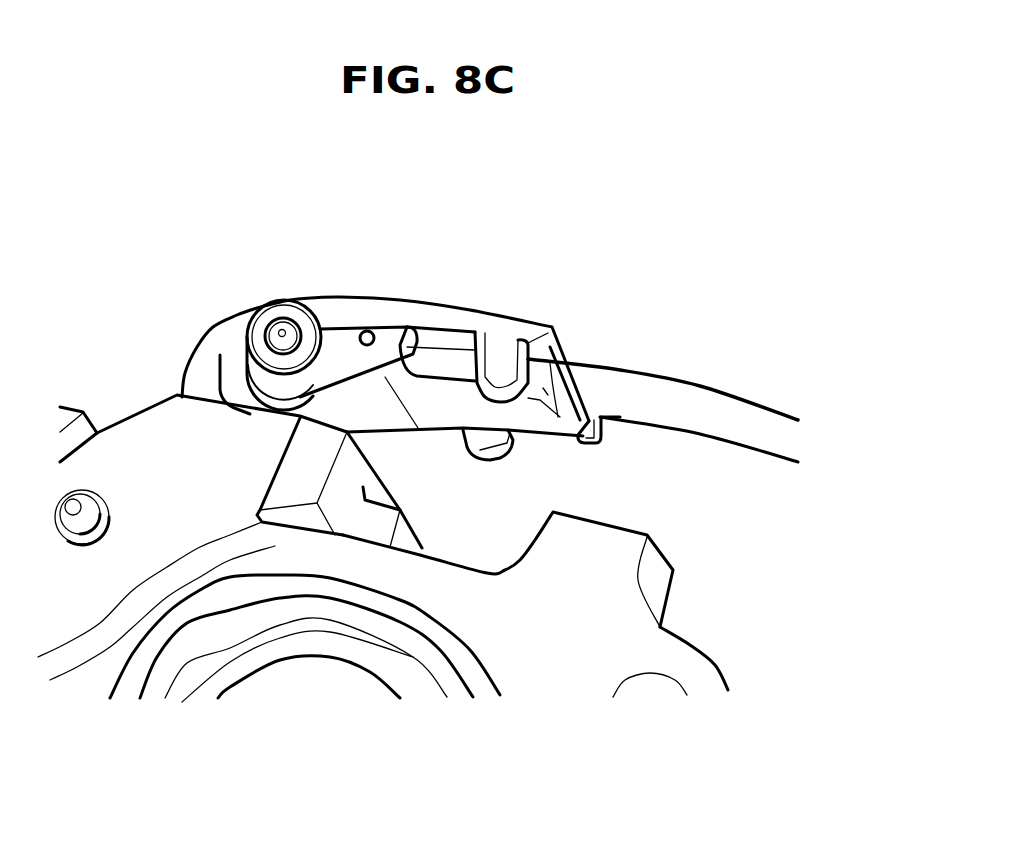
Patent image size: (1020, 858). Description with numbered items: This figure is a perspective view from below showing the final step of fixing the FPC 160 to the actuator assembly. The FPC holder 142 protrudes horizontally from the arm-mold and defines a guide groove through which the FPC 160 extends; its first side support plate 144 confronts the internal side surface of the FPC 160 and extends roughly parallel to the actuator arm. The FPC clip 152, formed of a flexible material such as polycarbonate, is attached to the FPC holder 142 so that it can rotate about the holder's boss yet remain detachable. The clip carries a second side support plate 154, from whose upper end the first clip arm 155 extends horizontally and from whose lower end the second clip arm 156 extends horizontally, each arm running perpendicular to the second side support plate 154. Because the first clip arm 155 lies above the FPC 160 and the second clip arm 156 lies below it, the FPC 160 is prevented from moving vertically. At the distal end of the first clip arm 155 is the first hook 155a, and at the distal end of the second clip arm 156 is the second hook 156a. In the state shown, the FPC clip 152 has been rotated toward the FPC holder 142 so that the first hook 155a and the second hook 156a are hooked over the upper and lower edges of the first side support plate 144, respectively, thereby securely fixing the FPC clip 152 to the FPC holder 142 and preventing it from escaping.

The FPC holder 142 is at (202, 360).
The first side support plate 144 is at (595, 444).
The FPC clip 152 is at (363, 291).
The second side support plate 154 is at (447, 318).
The first clip arm 155 is at (517, 438).
The first hook 155a is at (490, 437).
The second clip arm 156 is at (497, 363).
The second hook 156a is at (541, 383).
The FPC 160 is at (695, 380).